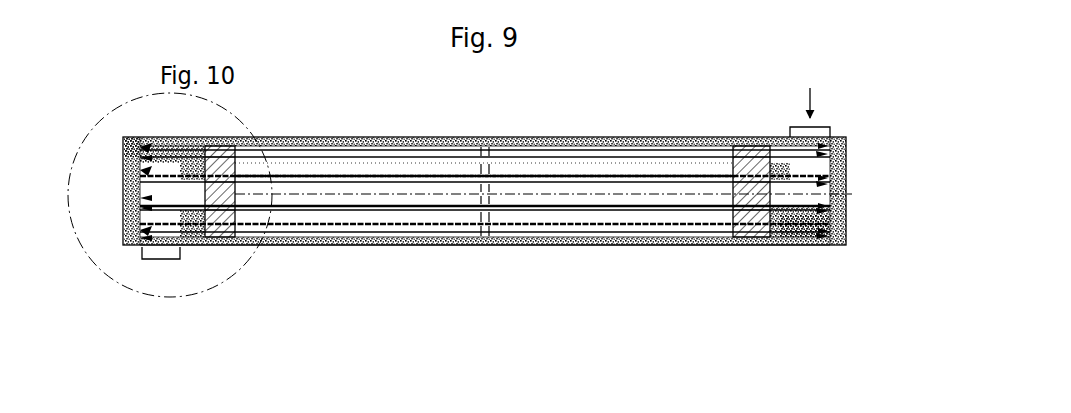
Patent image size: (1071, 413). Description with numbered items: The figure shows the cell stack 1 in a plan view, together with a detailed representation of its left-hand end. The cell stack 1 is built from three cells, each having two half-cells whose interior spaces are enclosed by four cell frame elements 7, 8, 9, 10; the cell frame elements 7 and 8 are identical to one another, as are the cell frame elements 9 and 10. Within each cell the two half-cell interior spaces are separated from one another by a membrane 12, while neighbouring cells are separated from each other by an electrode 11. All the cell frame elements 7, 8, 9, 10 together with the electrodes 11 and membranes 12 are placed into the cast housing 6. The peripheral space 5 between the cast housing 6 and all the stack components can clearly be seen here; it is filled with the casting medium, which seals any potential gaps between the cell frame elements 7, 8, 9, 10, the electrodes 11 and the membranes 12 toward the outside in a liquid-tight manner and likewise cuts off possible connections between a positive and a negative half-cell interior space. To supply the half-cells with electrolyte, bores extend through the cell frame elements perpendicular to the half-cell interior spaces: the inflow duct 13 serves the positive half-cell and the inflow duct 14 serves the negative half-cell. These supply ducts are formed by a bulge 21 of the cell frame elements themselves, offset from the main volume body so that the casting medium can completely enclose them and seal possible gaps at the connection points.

In FIG. 9, the cell stack 1 is at (497, 275).
In FIG. 10, the space 5 is at (148, 138).
In FIG. 9, the cast housing 6 is at (654, 247).
In FIG. 9, the cell frame element 7 is at (826, 141).
In FIG. 10, the cell frame element 8 is at (128, 160).
In FIG. 9, the cell frame element 9 is at (829, 150).
In FIG. 10, the cell frame element 10 is at (128, 144).
In FIG. 9, the electrode 11 is at (736, 145).
In FIG. 9, the membrane 12 is at (731, 141).
In FIG. 9, the inflow duct 13 is at (792, 92).
In FIG. 10, the inflow duct 14 is at (160, 272).
In FIG. 9, the bulge 21 is at (818, 130).